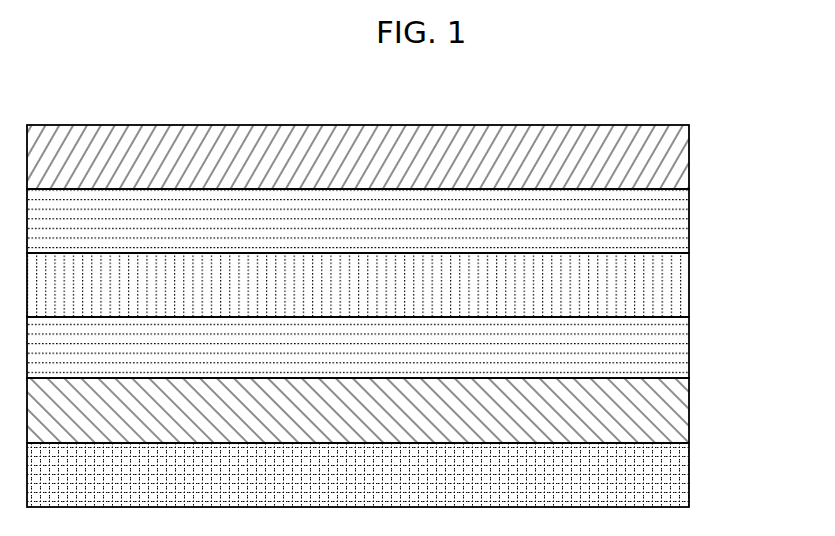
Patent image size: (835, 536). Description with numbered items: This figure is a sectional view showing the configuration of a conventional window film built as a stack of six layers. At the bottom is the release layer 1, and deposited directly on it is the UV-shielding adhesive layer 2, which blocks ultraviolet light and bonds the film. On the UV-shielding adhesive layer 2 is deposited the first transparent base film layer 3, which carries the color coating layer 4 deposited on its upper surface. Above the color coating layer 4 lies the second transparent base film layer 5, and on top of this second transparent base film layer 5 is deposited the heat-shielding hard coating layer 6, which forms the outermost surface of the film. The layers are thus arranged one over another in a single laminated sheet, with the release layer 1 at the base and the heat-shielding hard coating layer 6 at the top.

The release layer 1 is at (689, 475).
The UV-shielding adhesive layer 2 is at (689, 407).
The first transparent base film layer 3 is at (689, 345).
The color coating layer 4 is at (689, 276).
The second transparent base film layer 5 is at (689, 227).
The heat-shielding hard coating layer 6 is at (689, 160).